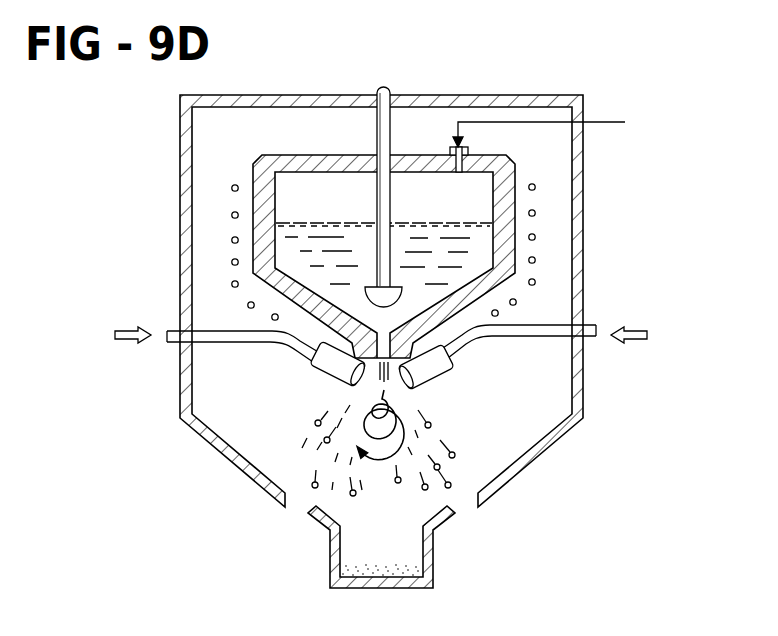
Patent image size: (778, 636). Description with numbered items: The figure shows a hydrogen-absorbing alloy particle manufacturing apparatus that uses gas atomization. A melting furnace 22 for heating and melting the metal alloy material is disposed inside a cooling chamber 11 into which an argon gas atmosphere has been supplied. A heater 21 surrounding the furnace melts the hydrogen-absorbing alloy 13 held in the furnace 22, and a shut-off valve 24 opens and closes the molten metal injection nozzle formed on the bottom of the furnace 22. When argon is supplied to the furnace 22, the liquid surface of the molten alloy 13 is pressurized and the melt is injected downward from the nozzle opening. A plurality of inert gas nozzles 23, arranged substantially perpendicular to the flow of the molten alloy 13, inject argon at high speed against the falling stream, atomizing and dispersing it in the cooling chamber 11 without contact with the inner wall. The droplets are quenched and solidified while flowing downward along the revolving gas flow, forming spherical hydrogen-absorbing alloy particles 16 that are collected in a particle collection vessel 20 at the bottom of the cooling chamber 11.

The cooling chamber 11 is at (584, 255).
The hydrogen-absorbing alloy 13 is at (334, 223).
The hydrogen-absorbing alloy particles 16 is at (340, 576).
The particle collection vessel 20 is at (432, 550).
The heater 21 is at (537, 187).
The melting furnace 22 is at (251, 178).
The inert gas nozzles 23 is at (323, 373).
The shut-off valve 24 is at (377, 128).